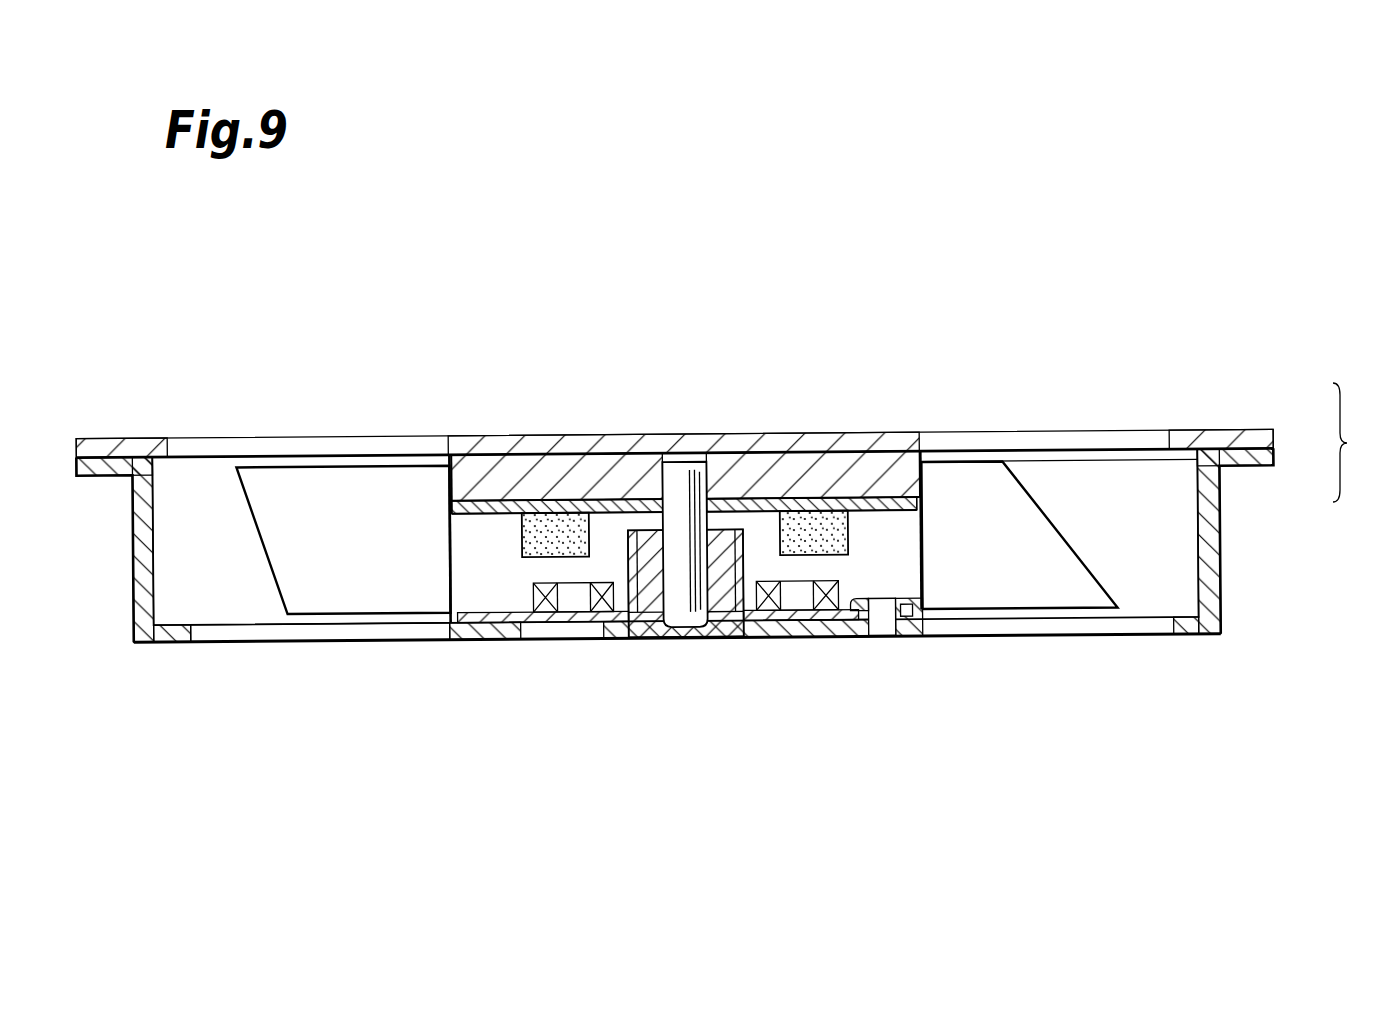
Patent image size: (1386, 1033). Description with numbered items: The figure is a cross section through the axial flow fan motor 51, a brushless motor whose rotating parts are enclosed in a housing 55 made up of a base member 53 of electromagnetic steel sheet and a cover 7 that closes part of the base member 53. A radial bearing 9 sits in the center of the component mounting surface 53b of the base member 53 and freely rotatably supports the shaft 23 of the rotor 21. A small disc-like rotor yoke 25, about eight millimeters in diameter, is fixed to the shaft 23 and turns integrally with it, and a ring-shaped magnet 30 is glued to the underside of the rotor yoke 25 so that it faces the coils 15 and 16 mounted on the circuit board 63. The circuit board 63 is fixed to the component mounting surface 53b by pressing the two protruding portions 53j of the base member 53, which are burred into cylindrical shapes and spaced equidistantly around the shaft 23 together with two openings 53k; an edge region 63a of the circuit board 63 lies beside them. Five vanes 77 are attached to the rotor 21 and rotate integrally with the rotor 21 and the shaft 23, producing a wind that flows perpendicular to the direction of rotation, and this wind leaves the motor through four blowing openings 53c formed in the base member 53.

The fan motor 51 is at (1199, 289).
The housing 55 is at (1359, 442).
The cover 7 is at (1230, 435).
The base member 53 is at (1210, 512).
The component mounting surface 53b is at (183, 625).
The blowing opening 53c is at (327, 641).
The protruding portion 53j is at (940, 607).
The opening 53k is at (567, 641).
The rotor 21 is at (874, 452).
The rotor yoke 25 is at (497, 506).
The shaft 23 is at (690, 465).
The radial bearing 9 is at (658, 641).
The magnet 30 is at (508, 530).
The coil 16 is at (535, 584).
The coil 15 is at (833, 582).
The circuit board 63 is at (813, 641).
The circuit board edge portion 63a is at (872, 626).
The vane 77 is at (315, 500).